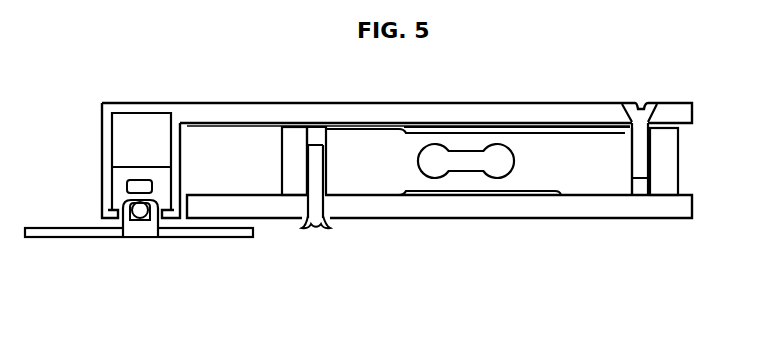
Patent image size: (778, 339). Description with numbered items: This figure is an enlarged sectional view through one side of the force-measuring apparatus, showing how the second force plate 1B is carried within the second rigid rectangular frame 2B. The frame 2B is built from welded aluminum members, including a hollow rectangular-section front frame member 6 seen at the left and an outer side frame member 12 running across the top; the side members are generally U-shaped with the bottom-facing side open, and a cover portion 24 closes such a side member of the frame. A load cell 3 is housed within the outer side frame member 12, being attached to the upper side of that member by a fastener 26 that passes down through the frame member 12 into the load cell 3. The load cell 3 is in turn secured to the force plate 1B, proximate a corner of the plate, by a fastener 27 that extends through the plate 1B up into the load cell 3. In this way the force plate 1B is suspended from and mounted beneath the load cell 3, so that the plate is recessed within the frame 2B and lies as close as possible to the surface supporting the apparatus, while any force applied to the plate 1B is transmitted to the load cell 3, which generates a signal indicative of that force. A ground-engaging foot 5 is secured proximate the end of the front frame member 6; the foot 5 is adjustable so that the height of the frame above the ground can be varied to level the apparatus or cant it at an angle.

The second rectangular force plate 1B is at (540, 207).
The second rigid rectangular frame 2B is at (160, 110).
The load cell 3 is at (388, 160).
The ground engaging foot 5 is at (93, 233).
The front frame member 6 is at (108, 155).
The outer side frame member 12 is at (468, 115).
The cover portion 24 is at (272, 125).
The fastener 26 is at (639, 127).
The fastener 27 is at (317, 207).